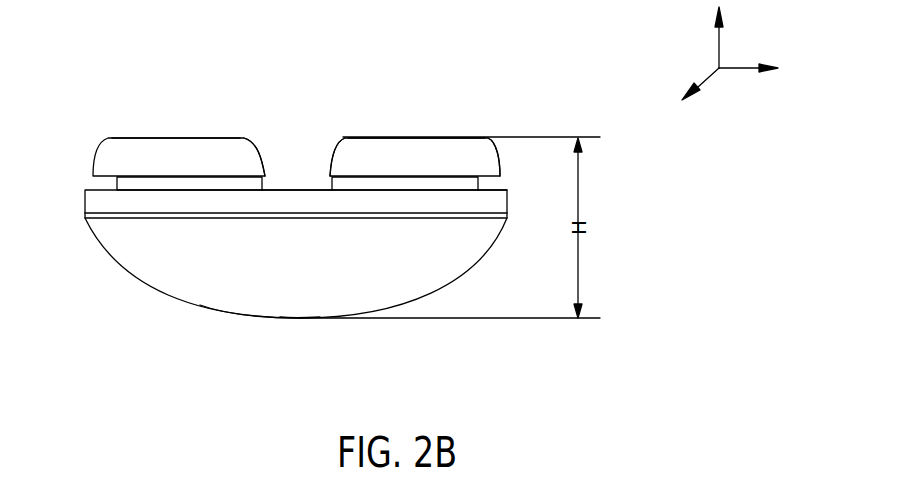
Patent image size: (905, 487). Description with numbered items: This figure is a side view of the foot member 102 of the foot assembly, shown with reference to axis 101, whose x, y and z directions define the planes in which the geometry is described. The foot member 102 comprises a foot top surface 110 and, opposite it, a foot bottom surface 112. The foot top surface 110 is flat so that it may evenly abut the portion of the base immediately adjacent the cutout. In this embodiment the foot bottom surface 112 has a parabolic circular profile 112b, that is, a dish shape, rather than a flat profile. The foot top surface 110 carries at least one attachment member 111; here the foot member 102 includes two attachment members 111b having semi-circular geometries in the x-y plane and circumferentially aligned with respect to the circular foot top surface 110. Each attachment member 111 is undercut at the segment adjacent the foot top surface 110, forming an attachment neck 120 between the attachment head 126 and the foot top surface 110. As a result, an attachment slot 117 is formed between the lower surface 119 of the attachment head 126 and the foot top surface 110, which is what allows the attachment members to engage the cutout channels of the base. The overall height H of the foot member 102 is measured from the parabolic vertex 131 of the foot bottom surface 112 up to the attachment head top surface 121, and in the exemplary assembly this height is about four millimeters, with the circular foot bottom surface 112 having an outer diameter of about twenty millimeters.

The axis 101 is at (720, 47).
The foot member 102 is at (100, 240).
The foot top surface 110 is at (290, 190).
The attachment member 111 is at (87, 138).
The attachment members 111b is at (130, 137).
The foot bottom surface 112 is at (190, 297).
The parabolic circular profile 112b is at (230, 312).
The attachment slot 117 is at (117, 184).
The lower surface of attachment head 119 is at (331, 177).
The attachment neck 120 is at (263, 188).
The attachment head top surface 121 is at (490, 137).
The attachment head 126 is at (263, 142).
The parabolic vertex 131 is at (301, 320).